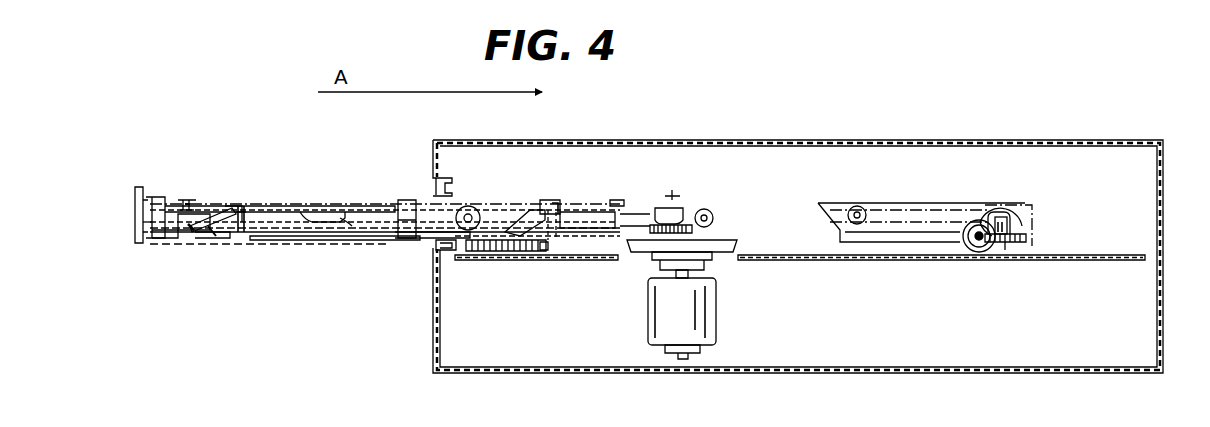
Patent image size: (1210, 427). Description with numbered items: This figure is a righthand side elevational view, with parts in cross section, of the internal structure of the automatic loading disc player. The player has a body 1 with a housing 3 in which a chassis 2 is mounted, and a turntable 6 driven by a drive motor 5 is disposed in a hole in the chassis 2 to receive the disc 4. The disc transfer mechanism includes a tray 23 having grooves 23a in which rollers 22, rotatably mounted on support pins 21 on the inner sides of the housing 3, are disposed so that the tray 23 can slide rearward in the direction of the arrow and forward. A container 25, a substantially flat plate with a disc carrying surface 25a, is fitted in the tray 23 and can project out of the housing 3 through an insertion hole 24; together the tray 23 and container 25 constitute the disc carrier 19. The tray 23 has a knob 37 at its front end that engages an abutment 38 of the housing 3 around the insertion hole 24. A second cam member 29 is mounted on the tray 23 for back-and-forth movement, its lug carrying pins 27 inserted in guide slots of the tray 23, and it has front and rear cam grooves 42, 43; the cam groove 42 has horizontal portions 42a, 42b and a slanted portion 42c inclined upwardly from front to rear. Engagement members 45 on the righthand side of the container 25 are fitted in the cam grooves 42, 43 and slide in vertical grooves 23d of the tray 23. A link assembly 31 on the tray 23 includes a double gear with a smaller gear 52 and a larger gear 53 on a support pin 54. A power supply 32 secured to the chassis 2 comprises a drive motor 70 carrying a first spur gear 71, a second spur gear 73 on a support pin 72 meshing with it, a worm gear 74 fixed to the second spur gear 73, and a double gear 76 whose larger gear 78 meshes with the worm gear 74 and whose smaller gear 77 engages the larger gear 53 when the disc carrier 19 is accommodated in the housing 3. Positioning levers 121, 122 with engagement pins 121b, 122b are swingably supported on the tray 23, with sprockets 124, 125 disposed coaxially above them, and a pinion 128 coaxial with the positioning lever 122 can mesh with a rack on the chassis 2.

The body 1 is at (642, 128).
The chassis 2 is at (1118, 264).
The housing 3 is at (780, 137).
The disc 4 is at (368, 216).
The drive motor 5 is at (718, 326).
The turntable 6 is at (722, 252).
The disc carrier 19 is at (302, 246).
The support pins 21 is at (476, 216).
The rollers 22 is at (470, 206).
The tray 23 is at (335, 208).
The grooves 23a is at (153, 197).
The vertical grooves 23d is at (556, 242).
The insertion hole 24 is at (418, 240).
The container 25 is at (314, 216).
The disc carrying surface 25a is at (344, 226).
The pins 27 is at (186, 198).
The second cam member 29 is at (358, 242).
The link assembly 31 is at (674, 190).
The power supply 32 is at (1036, 206).
The knob 37 is at (133, 212).
The abutment 38 is at (440, 190).
The cam groove 42 is at (200, 214).
The horizontal portion 42a is at (190, 228).
The horizontal portion 42b is at (236, 206).
The slanted portion 42c is at (214, 232).
The cam groove 43 is at (524, 212).
The engagement members 45 is at (244, 224).
The smaller gear 52 is at (654, 208).
The larger gear 53 is at (652, 230).
The support pin 54 is at (674, 212).
The drive motor 70 is at (1004, 210).
The first spur gear 71 is at (988, 210).
The support pin 72 is at (982, 242).
The second spur gear 73 is at (965, 244).
The worm gear 74 is at (975, 246).
The double gear 76 is at (1032, 242).
The smaller gear 77 is at (1016, 228).
The larger gear 78 is at (1010, 250).
The positioning lever 121 is at (160, 234).
The engagement pin 121b is at (214, 236).
The positioning lever 122 is at (512, 232).
The engagement pin 122b is at (408, 200).
The sprocket 124 is at (138, 224).
The sprocket 125 is at (465, 250).
The pinion 128 is at (542, 250).